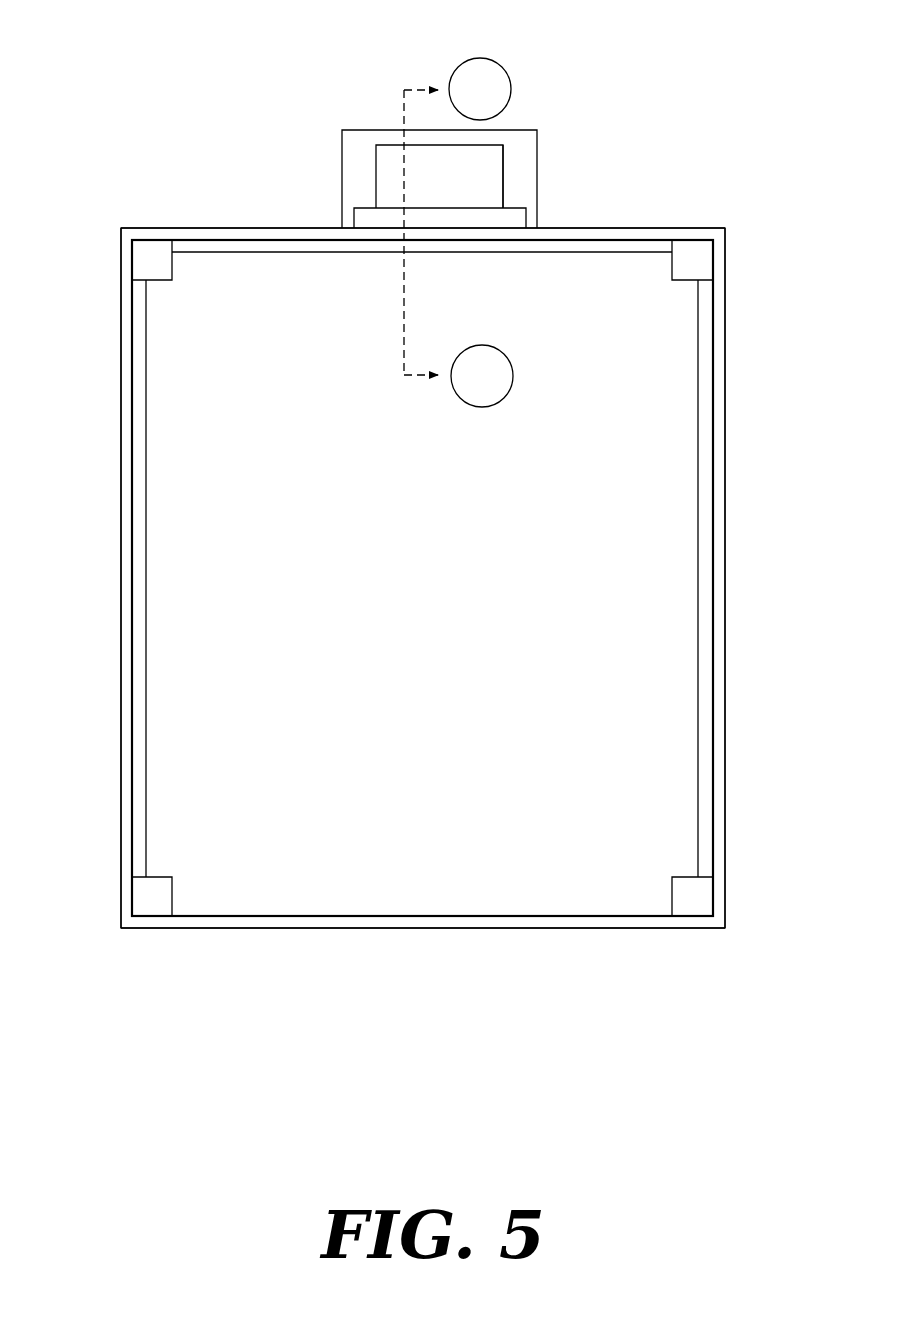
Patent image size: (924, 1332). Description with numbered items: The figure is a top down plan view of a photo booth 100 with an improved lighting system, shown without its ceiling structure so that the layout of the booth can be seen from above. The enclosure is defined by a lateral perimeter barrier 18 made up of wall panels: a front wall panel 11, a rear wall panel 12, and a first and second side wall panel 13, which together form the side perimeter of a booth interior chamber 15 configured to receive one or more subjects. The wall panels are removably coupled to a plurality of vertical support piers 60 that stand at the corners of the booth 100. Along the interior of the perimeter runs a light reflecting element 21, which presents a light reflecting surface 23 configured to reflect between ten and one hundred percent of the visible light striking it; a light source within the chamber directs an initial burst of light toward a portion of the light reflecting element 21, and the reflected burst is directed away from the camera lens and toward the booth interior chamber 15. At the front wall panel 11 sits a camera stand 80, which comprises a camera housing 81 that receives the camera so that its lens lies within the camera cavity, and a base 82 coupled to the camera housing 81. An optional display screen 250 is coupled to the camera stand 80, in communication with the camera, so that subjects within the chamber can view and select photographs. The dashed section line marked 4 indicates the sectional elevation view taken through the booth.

The photo booth 100 is at (119, 66).
The front wall panel 11 is at (324, 236).
The rear wall panel 12 is at (410, 927).
The side wall panel 13 is at (127, 545).
The booth interior chamber 15 is at (624, 520).
The lateral perimeter barrier 18 is at (550, 928).
The light reflecting element 21 is at (335, 252).
The light reflecting surface 23 is at (559, 258).
The vertical support pier 60 is at (147, 268).
The camera stand 80 is at (342, 139).
The camera housing 81 is at (392, 155).
The base 82 is at (520, 152).
The display screen 250 is at (495, 222).
The section line 4- 4 is at (458, 232).